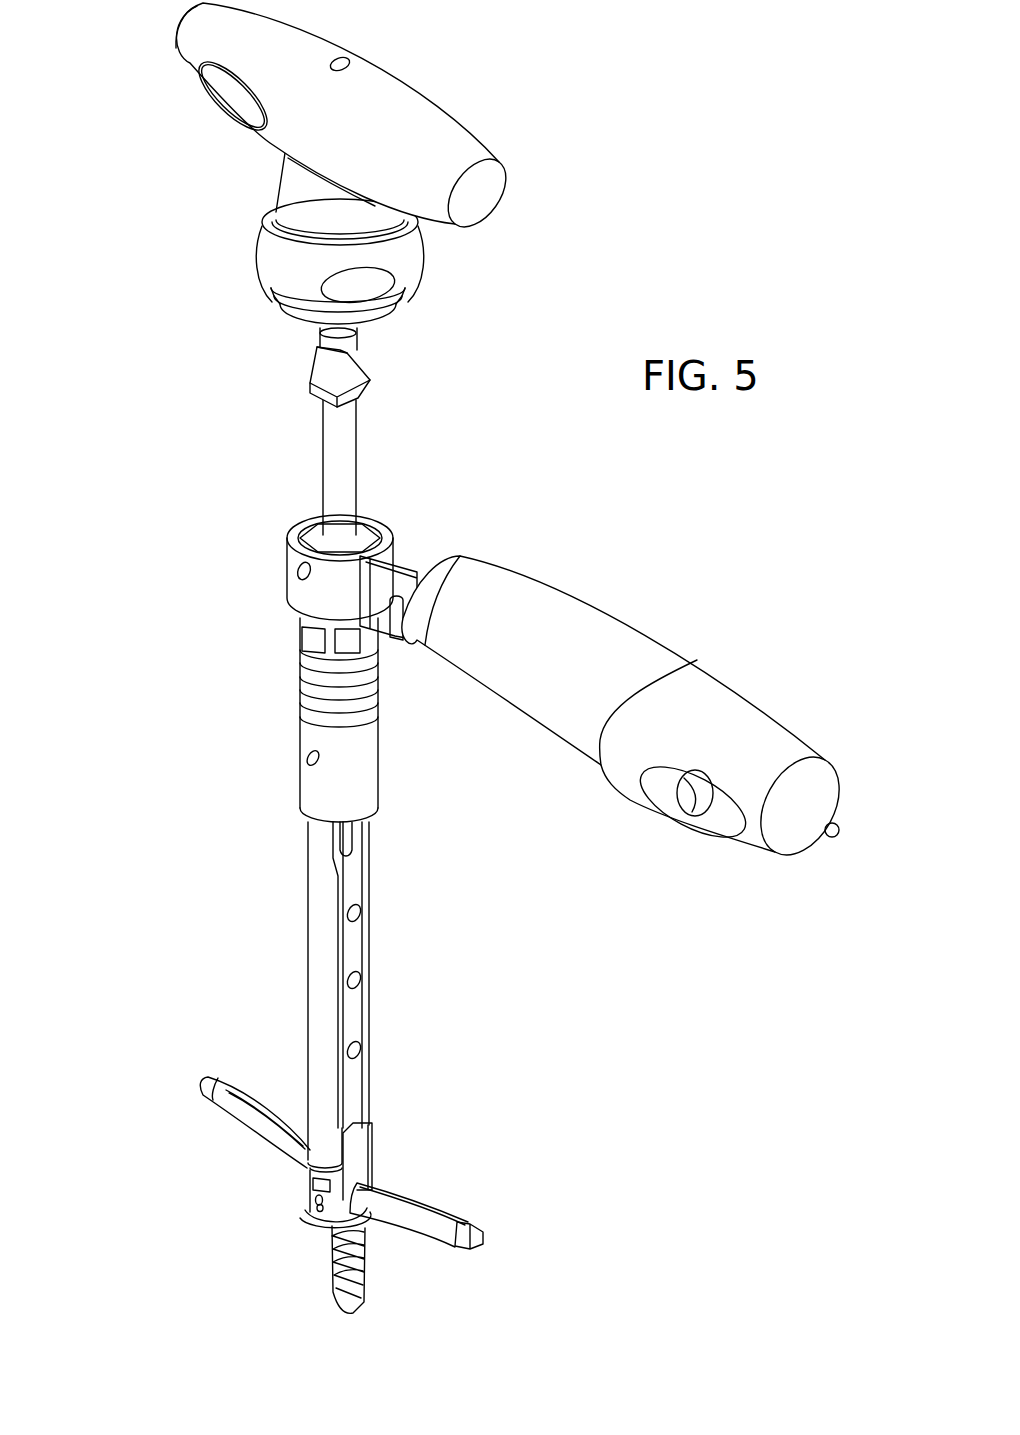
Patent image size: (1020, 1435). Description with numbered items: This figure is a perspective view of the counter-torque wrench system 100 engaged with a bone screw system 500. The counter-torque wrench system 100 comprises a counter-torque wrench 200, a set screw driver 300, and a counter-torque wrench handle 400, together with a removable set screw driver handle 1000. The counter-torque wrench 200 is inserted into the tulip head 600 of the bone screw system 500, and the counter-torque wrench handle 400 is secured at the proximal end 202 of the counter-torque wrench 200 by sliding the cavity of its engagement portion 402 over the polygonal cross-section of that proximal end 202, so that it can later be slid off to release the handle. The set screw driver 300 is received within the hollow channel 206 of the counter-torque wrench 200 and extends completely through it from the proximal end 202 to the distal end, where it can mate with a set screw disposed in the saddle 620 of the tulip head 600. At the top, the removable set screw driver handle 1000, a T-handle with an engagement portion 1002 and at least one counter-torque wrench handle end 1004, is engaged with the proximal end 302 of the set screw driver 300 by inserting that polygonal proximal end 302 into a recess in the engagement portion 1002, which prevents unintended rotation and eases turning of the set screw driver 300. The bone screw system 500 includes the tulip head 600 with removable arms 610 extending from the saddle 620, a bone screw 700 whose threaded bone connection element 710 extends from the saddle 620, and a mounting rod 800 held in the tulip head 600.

The counter-torque wrench system 100 is at (100, 77).
The counter-torque wrench 200 is at (400, 775).
The proximal end 202 is at (288, 567).
The hollow channel 206 is at (366, 513).
The set screw driver 300 is at (310, 339).
The proximal end 302 is at (370, 382).
The counter-torque wrench handle 400 is at (671, 620).
The engagement portion 402 is at (307, 517).
The bone screw system 500 is at (187, 1165).
The tulip head 600 is at (287, 999).
The removable arm 610 is at (372, 992).
The saddle 620 is at (317, 1213).
The bone screw 700 is at (386, 1275).
The bone connection element 710 is at (338, 1273).
The mounting rod 800 is at (436, 1200).
The removable set screw driver handle 1000 is at (216, 174).
The engagement portion 1002 is at (262, 242).
The counter-torque wrench handle end 1004 is at (190, 70).